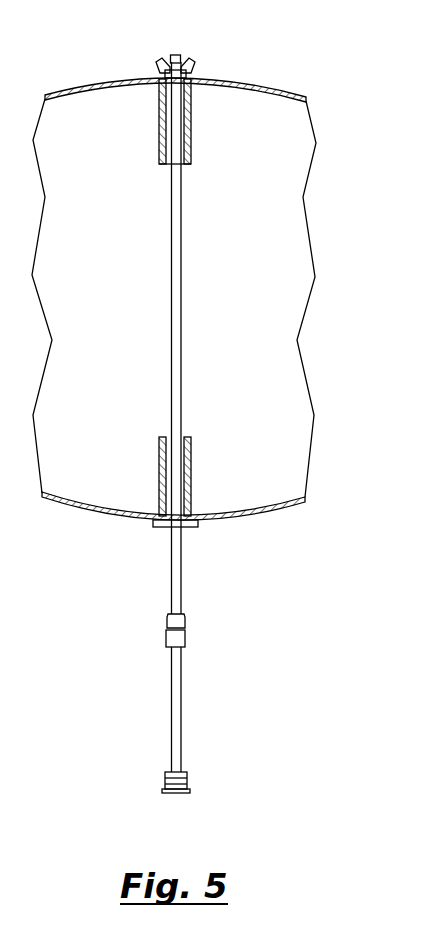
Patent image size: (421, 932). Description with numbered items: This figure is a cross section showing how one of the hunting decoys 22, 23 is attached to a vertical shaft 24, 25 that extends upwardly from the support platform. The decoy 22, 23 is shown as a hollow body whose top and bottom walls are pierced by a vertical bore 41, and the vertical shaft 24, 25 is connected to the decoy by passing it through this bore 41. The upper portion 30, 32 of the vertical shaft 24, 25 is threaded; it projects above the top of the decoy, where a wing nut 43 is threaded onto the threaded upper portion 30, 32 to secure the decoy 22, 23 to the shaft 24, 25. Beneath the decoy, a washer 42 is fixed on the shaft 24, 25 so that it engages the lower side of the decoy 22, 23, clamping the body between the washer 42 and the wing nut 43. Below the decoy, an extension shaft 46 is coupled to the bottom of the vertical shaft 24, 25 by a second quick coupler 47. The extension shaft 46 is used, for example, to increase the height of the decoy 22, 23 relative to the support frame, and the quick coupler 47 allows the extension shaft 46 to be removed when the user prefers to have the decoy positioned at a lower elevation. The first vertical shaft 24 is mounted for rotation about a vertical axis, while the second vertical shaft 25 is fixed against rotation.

The first hunting decoy 22 is at (215, 297).
The second hunting decoy 23 is at (280, 92).
The first vertical shaft 24 is at (109, 338).
The second vertical shaft 25 is at (173, 562).
The upper portion 30 is at (244, 45).
The upper portion 32 is at (182, 57).
The vertical bore 41 is at (184, 437).
The washer 42 is at (188, 527).
The wing nut 43 is at (154, 63).
The extension shaft 46 is at (177, 697).
The second quick coupler 47 is at (167, 625).